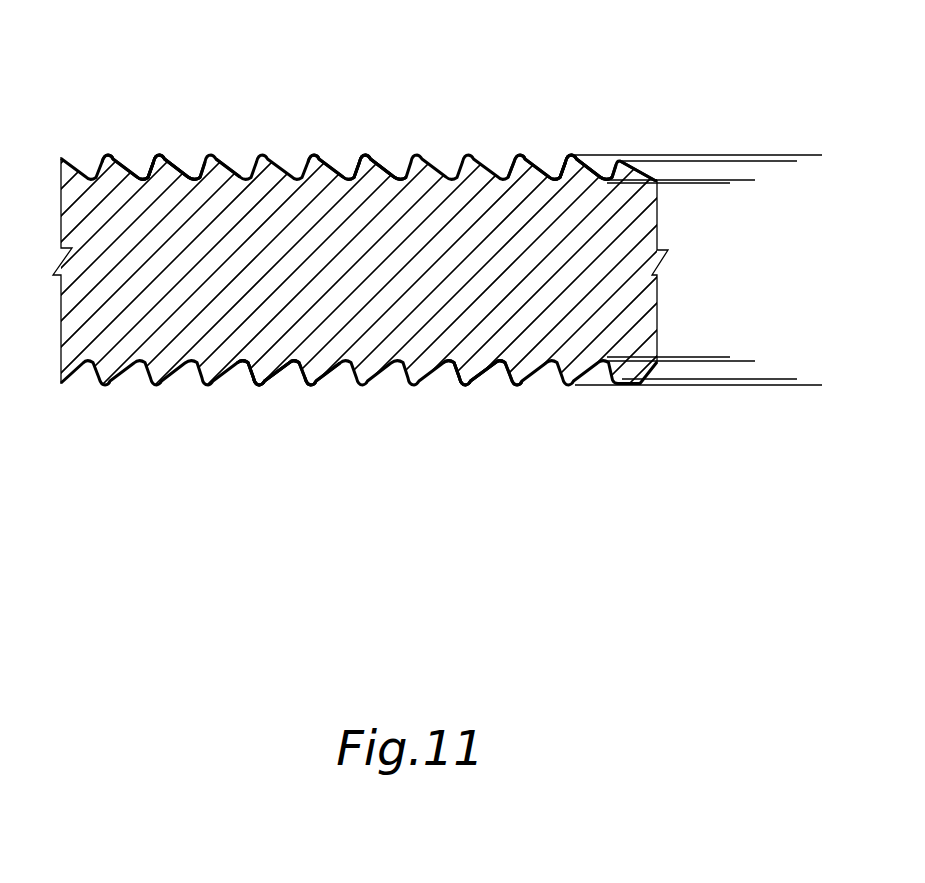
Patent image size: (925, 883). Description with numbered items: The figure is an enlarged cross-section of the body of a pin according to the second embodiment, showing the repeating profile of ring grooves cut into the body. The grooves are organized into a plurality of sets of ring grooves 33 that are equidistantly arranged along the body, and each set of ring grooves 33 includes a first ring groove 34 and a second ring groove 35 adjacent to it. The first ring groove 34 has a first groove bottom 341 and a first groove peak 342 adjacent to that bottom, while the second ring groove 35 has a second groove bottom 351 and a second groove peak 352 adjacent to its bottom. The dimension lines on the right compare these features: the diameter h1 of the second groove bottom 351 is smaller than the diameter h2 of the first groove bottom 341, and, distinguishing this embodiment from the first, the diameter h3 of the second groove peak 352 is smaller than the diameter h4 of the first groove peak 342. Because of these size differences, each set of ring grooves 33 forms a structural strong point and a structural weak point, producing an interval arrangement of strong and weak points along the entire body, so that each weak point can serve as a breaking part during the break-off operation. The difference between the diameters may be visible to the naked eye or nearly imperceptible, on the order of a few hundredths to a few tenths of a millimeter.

The set of ring grooves 33 is at (112, 51).
The first ring groove 34 is at (137, 150).
The second ring groove 35 is at (189, 156).
The first groove bottom 341 is at (142, 180).
The first groove peak 342 is at (150, 172).
The second groove bottom 351 is at (215, 165).
The second groove peak 352 is at (199, 172).
The diameter of the second groove bottom h1 is at (723, 183).
The diameter of the first groove bottom h2 is at (748, 361).
The diameter of the second groove peak h3 is at (790, 161).
The diameter of the first groove peak h4 is at (815, 385).